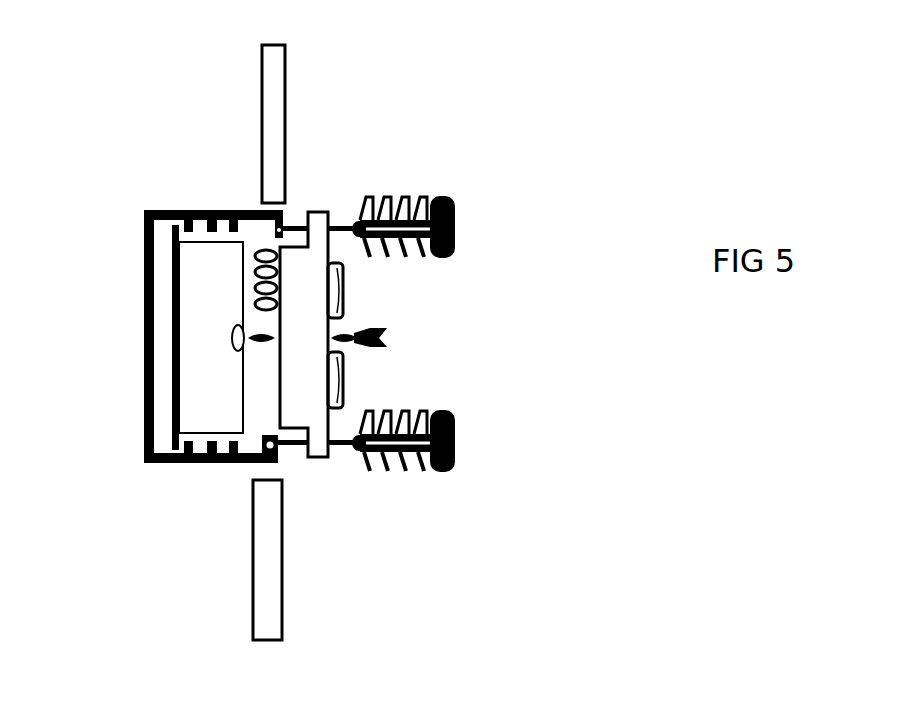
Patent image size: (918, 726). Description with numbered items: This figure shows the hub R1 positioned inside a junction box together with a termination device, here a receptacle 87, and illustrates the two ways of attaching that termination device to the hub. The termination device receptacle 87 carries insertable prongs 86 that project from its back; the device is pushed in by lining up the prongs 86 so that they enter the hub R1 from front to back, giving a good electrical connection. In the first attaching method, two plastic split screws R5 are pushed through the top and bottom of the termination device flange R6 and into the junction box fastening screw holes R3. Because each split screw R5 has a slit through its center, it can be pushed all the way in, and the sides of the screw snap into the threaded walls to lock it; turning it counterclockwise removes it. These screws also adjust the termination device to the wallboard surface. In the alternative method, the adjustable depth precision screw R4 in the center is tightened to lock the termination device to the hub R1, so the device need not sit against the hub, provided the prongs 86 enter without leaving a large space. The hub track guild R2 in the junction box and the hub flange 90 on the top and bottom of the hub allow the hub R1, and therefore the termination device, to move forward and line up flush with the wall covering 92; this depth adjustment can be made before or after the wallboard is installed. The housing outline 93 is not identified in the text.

The termination device insertable prong 86 is at (262, 248).
The termination device, receptacle 87 is at (347, 285).
The hub flange 90 is at (172, 442).
The wall covering 92 is at (307, 110).
The housing 93 is at (155, 210).
The hub R1 is at (207, 280).
The hub track guild R2 is at (173, 463).
The junction box fastening screw hole R3 is at (276, 451).
The adjustable depth precision screw R4 is at (383, 338).
The split screw R5 is at (455, 217).
The termination device flange R6 is at (327, 455).